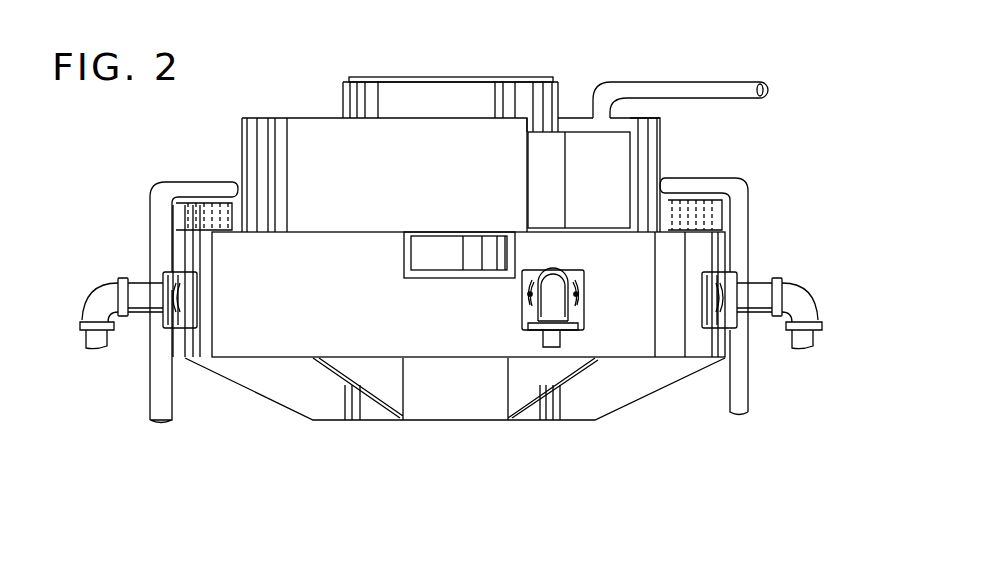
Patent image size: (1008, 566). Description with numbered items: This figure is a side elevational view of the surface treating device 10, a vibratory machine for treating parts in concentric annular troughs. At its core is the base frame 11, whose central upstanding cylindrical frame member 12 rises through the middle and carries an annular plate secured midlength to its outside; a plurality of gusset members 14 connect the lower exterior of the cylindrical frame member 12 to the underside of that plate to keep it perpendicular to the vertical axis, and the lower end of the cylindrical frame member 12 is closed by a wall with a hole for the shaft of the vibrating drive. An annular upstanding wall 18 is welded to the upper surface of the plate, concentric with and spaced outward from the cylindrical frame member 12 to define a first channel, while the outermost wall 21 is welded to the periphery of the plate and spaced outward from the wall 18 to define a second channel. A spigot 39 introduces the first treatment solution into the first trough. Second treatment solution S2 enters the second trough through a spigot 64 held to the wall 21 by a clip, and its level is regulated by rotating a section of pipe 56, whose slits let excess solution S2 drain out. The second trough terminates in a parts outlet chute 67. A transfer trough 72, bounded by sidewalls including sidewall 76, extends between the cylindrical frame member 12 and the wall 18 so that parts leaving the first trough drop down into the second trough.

The surface treating device 10 is at (632, 52).
The base frame 11 is at (612, 420).
The cylindrical frame member 12 is at (563, 86).
The gusset members 14 is at (280, 380).
The annular upstanding wall 18 is at (243, 131).
The wall 21 is at (220, 252).
The spigot 39 is at (720, 88).
The pipe 56 is at (147, 303).
The spigot 64 is at (200, 183).
The parts outlet chute 67 is at (444, 245).
The transfer trough 72 is at (612, 179).
The sidewall 76 is at (622, 150).
The second treatment solution S2 is at (237, 222).